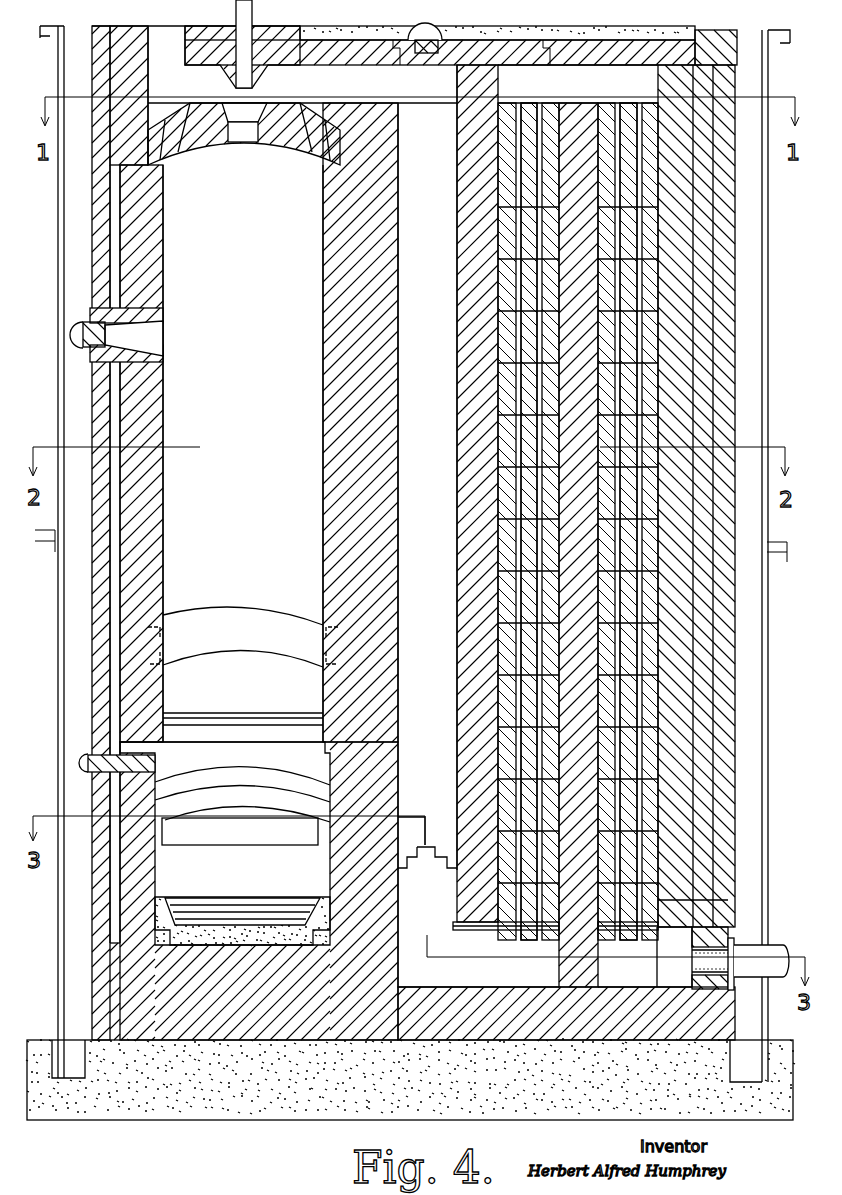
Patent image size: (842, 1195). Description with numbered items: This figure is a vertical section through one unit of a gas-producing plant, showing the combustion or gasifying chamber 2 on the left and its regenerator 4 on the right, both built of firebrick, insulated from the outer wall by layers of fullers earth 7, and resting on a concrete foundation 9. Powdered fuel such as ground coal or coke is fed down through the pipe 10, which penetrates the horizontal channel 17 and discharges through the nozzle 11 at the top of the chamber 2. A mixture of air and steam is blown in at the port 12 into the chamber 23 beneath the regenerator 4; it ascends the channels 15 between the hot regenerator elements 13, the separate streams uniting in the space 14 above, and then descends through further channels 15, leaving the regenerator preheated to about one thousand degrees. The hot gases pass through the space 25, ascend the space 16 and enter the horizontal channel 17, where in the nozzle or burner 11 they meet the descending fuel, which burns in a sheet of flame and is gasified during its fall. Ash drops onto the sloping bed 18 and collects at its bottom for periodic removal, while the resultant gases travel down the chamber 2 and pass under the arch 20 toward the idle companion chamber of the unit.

The combustion or gasifying chamber 2 is at (259, 571).
The regenerator 4 is at (545, 336).
The layers of fullers earth 7 is at (112, 594).
The concrete foundation 9 is at (222, 1105).
The pipe 10 is at (252, 22).
The nozzle 11 is at (240, 136).
The port 12 is at (790, 1025).
The regenerator elements 13 is at (615, 813).
The space 14 is at (540, 92).
The channels 15 is at (545, 130).
The space 16 is at (448, 493).
The horizontal channel 17 is at (302, 448).
The sloping bed 18 is at (248, 915).
The arch 20 is at (258, 792).
The chamber 23 is at (663, 944).
The space 25 is at (478, 929).